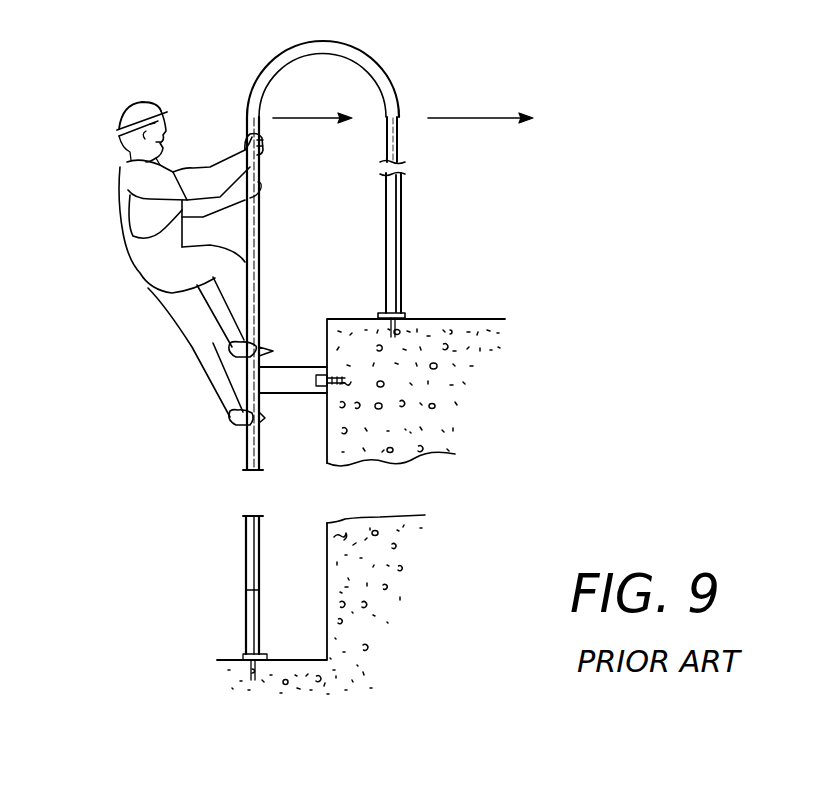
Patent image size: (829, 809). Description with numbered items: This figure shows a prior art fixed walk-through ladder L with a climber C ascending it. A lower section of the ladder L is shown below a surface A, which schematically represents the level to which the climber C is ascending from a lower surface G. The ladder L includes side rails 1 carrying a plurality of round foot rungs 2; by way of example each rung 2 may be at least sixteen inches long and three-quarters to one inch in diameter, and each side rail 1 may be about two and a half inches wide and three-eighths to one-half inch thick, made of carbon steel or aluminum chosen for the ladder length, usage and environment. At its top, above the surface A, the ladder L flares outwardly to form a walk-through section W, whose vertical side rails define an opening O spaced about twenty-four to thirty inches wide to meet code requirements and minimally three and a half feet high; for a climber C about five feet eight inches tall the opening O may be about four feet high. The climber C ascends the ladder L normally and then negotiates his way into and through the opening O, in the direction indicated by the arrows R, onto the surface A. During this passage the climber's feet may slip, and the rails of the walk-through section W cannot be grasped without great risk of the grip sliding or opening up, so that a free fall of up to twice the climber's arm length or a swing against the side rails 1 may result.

The walk-through section W is at (259, 75).
The arrows R is at (306, 118).
The opening O is at (333, 185).
The climber C is at (115, 169).
The surface A is at (458, 319).
The ladder L is at (246, 441).
The foot rung 2 is at (257, 590).
The side rail 1 is at (247, 613).
The lower surface G is at (240, 651).